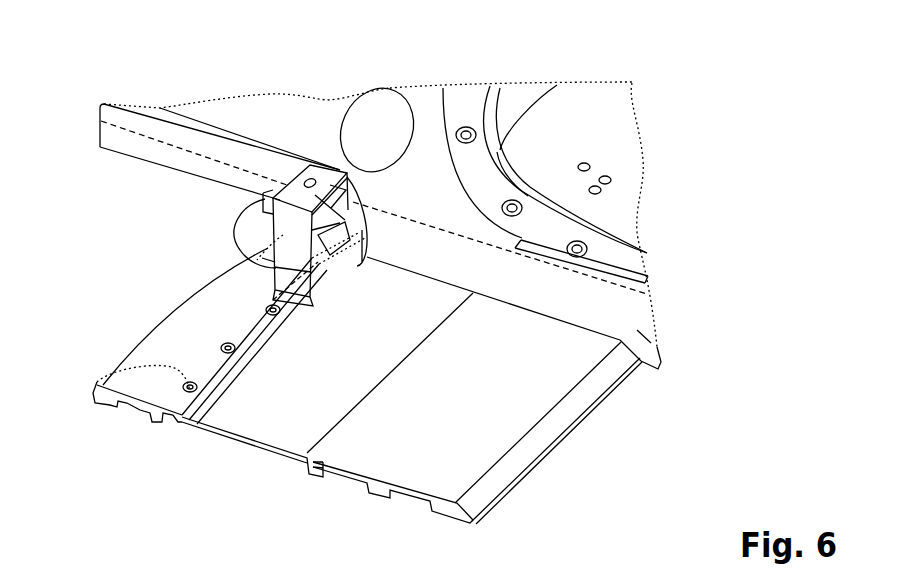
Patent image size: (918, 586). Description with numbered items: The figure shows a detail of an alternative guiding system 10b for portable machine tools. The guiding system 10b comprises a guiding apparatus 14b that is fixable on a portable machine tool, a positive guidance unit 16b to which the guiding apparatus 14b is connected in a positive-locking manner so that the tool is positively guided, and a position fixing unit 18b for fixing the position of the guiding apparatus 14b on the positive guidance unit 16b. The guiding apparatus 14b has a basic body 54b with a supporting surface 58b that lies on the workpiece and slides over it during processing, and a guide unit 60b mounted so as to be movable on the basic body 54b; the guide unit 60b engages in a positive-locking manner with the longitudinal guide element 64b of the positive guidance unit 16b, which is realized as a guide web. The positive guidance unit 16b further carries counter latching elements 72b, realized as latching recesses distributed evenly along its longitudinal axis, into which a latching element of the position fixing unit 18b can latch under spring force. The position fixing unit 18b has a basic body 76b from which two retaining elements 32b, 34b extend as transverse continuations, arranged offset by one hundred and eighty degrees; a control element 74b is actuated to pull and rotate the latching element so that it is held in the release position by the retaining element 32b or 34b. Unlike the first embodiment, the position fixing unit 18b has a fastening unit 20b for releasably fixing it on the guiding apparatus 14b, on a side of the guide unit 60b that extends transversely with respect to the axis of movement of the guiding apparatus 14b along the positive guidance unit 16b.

The guiding system 10b is at (760, 117).
The guiding apparatus 14b is at (713, 282).
The positive guidance unit 16b is at (123, 440).
The position fixing unit 18b is at (200, 237).
The fastening unit 20b is at (237, 205).
The retaining element 32b is at (318, 258).
The retaining element 34b is at (350, 255).
The basic body 54b is at (660, 347).
The supporting surface 58b is at (650, 372).
The guide unit 60b is at (180, 278).
The longitudinal guide element 64b is at (190, 392).
The counter latching element 72b is at (103, 385).
The control element 74b is at (375, 250).
The basic body 76b is at (275, 255).